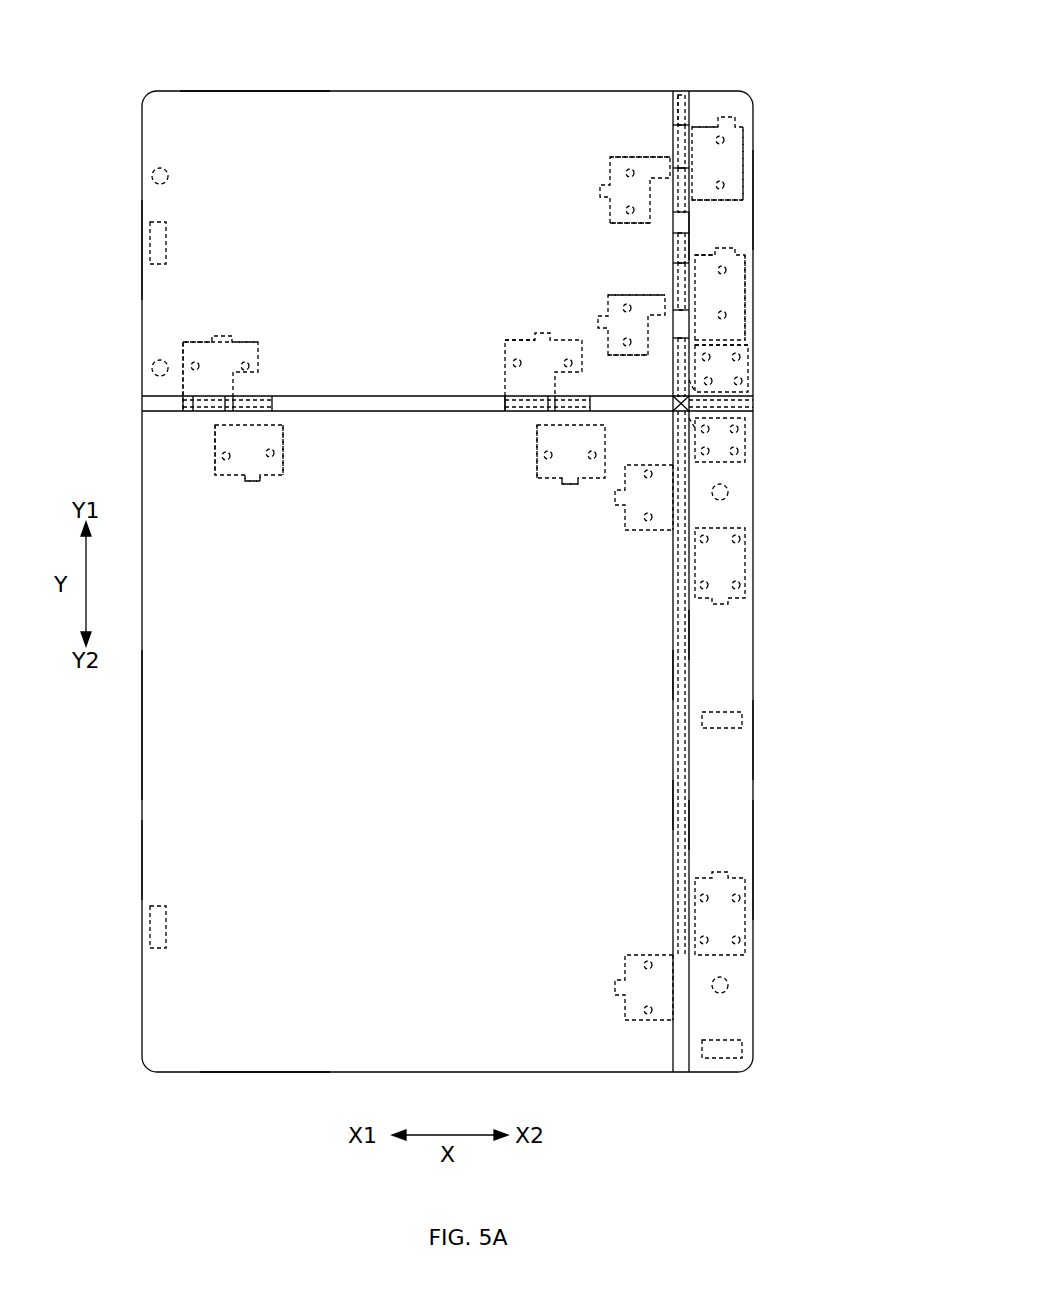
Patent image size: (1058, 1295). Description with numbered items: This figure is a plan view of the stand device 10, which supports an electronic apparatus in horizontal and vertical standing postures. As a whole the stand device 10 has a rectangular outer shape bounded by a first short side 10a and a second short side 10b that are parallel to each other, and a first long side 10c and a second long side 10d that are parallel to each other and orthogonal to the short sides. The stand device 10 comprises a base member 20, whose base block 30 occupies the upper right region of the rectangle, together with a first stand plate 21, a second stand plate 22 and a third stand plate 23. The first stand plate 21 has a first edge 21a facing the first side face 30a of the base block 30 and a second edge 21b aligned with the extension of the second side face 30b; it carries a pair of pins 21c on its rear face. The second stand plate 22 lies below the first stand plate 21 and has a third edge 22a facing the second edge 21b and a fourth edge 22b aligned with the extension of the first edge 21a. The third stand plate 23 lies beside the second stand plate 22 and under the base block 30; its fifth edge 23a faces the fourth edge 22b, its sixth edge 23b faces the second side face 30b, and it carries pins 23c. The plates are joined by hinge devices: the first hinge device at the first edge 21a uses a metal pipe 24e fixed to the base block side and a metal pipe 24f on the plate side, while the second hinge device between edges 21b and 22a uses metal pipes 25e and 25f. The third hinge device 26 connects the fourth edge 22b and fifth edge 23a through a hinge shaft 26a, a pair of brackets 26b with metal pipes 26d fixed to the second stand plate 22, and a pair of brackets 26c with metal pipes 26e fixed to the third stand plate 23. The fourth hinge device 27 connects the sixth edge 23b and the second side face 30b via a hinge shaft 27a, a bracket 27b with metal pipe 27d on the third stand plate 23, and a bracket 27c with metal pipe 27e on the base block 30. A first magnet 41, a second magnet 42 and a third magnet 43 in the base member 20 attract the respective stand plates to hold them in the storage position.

The stand device 10 is at (90, 28).
The first short side 10a is at (254, 90).
The second short side 10b is at (262, 1073).
The first long side 10c is at (141, 732).
The second long side 10d is at (754, 860).
The base member 20 is at (740, 88).
The first stand plate 21 is at (358, 80).
The first edge 21a is at (691, 234).
The second edge 21b is at (388, 411).
The pin 21c is at (152, 176).
The second stand plate 22 is at (130, 800).
The third edge 22a is at (368, 396).
The fourth edge 22b is at (690, 634).
The third stand plate 23 is at (770, 792).
The fifth edge 23a is at (680, 674).
The sixth edge 23b is at (744, 390).
The pin 23c is at (729, 491).
The metal pipe 24e is at (692, 160).
The metal pipe 24f is at (692, 196).
The metal pipe 25e is at (184, 340).
The metal pipe 25f is at (233, 412).
The third hinge device 26 is at (704, 684).
The hinge shaft 26a is at (680, 796).
The bracket 26b is at (628, 528).
The bracket 26c is at (746, 580).
The metal pipe 26d is at (672, 478).
The metal pipe 26e is at (690, 824).
The fourth hinge device 27 is at (746, 402).
The hinge shaft 27a is at (749, 426).
The bracket 27b is at (692, 428).
The bracket 27c is at (742, 346).
The metal pipe 27d is at (690, 388).
The metal pipe 27e is at (747, 442).
The base block 30 is at (727, 218).
The first side face 30a is at (683, 98).
The second side face 30b is at (750, 406).
The first magnet 41 is at (150, 242).
The second magnet 42 is at (150, 926).
The third magnet 43 is at (743, 722).